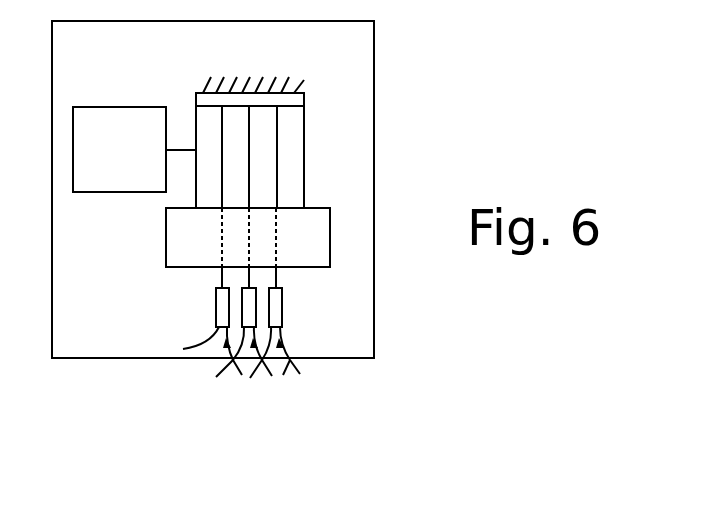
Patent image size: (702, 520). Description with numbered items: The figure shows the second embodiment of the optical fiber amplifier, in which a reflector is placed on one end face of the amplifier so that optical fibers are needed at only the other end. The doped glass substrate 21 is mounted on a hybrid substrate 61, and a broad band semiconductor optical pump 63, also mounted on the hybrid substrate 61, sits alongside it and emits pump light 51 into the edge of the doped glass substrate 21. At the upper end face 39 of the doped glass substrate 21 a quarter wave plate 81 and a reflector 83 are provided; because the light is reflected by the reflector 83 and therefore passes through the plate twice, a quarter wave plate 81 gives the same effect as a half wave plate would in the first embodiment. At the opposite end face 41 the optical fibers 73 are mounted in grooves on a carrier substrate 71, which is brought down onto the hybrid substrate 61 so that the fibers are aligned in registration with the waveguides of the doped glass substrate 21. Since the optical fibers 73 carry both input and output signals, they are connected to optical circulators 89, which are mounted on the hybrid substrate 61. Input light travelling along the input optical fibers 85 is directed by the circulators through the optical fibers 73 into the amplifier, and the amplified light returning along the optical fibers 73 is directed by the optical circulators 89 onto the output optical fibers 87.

The doped glass substrate 21 is at (304, 157).
The end face 39 is at (297, 107).
The end face 41 is at (290, 206).
The pump light 51 is at (177, 148).
The hybrid substrate 61 is at (100, 358).
The broad band semiconductor optical pump 63 is at (93, 106).
The carrier substrate 71 is at (330, 237).
The optical fibers 73 is at (277, 277).
The quarter wave plate 81 is at (304, 98).
The reflector 83 is at (297, 93).
The input optical fibers 85 is at (254, 366).
The output optical fibers 87 is at (290, 358).
The optical circulators 89 is at (282, 314).